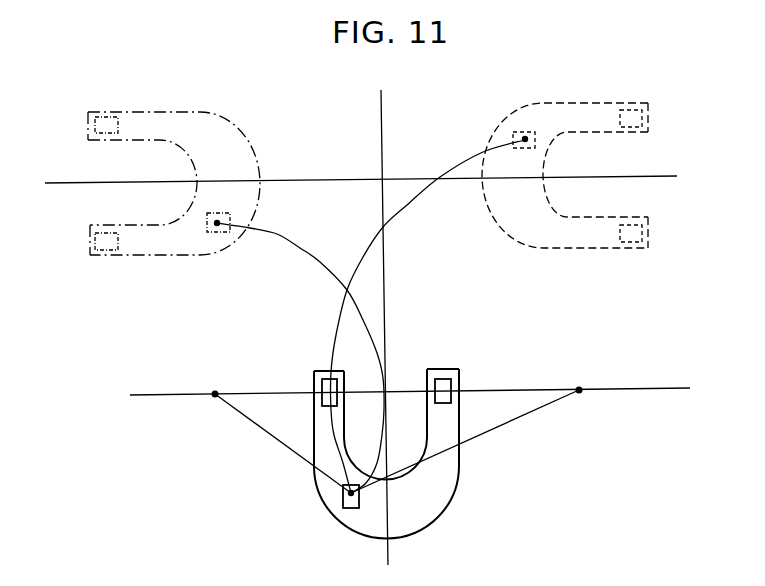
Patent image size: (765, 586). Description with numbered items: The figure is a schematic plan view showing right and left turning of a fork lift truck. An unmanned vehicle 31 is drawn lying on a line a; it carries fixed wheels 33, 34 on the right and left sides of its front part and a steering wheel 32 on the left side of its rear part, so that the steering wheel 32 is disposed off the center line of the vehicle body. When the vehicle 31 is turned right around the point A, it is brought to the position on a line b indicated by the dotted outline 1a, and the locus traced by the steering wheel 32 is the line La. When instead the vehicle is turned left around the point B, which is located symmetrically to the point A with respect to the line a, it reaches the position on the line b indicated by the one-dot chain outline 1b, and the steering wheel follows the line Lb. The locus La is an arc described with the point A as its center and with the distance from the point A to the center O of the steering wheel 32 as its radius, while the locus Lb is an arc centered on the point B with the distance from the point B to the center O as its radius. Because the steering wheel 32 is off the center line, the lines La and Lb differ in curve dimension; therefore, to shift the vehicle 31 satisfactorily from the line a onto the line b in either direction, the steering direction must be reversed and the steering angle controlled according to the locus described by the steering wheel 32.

The position after right turning 1a is at (594, 102).
The position after left turning 1b is at (213, 110).
The unmanned vehicle 31 is at (454, 497).
The steering wheel 32 is at (360, 497).
The fixed wheel 33 is at (313, 378).
The fixed wheel 34 is at (450, 372).
The locus of steering wheel in right turning La is at (458, 165).
The locus of steering wheel in left turning Lb is at (277, 236).
The center of the steering wheel O is at (342, 506).
The point A is at (585, 400).
The point B is at (208, 405).
The line a is at (388, 554).
The line b is at (643, 175).